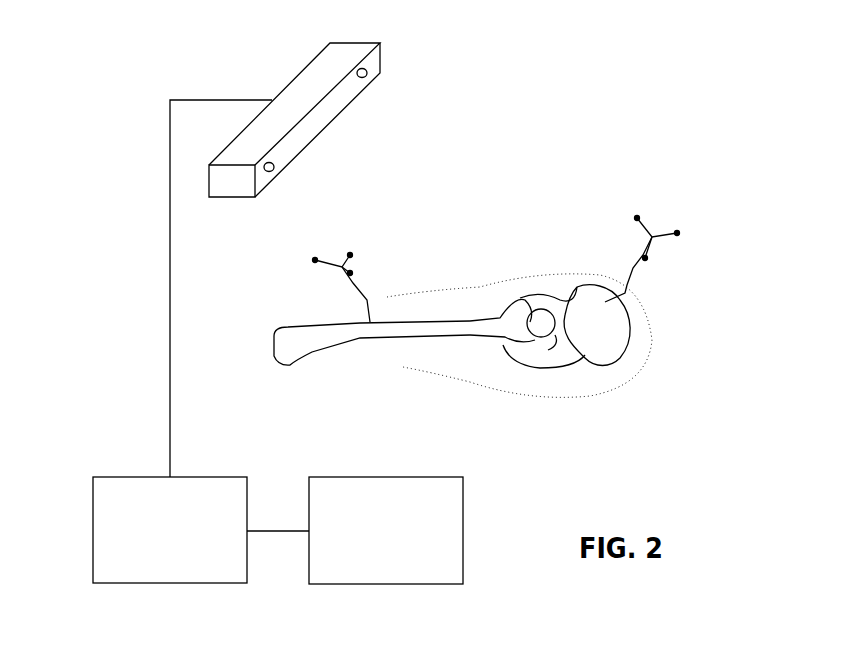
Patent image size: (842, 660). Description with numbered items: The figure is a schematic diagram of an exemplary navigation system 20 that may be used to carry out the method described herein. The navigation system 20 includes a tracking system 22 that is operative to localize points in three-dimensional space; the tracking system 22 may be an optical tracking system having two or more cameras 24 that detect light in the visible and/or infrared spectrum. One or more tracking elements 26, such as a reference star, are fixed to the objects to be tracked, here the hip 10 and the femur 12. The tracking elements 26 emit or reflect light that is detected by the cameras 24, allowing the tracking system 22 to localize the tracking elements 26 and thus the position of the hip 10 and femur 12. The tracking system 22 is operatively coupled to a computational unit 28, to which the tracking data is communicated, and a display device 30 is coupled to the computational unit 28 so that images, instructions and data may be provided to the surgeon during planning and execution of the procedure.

The navigation system 20 is at (160, 44).
The tracking system 22 is at (284, 58).
The cameras 24 is at (368, 72).
The tracking elements 26 is at (340, 270).
The femur 12 is at (397, 335).
The hip 10 is at (625, 352).
The computational unit 28 is at (93, 565).
The display device 30 is at (463, 565).